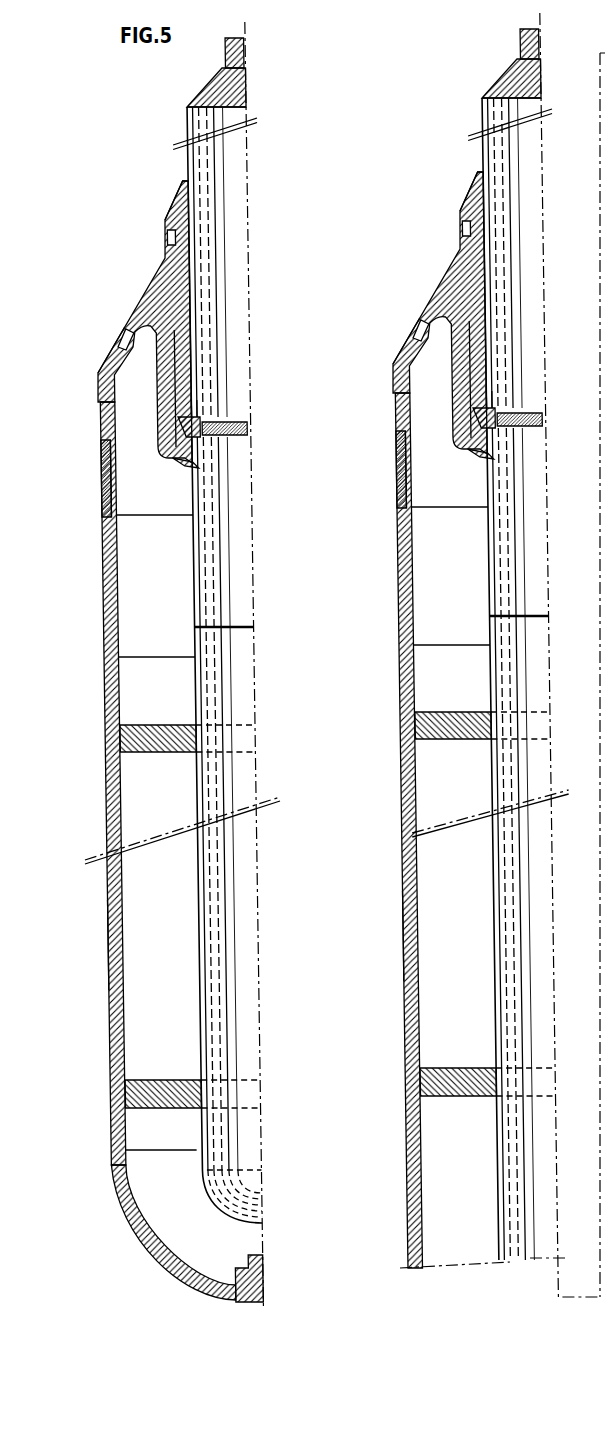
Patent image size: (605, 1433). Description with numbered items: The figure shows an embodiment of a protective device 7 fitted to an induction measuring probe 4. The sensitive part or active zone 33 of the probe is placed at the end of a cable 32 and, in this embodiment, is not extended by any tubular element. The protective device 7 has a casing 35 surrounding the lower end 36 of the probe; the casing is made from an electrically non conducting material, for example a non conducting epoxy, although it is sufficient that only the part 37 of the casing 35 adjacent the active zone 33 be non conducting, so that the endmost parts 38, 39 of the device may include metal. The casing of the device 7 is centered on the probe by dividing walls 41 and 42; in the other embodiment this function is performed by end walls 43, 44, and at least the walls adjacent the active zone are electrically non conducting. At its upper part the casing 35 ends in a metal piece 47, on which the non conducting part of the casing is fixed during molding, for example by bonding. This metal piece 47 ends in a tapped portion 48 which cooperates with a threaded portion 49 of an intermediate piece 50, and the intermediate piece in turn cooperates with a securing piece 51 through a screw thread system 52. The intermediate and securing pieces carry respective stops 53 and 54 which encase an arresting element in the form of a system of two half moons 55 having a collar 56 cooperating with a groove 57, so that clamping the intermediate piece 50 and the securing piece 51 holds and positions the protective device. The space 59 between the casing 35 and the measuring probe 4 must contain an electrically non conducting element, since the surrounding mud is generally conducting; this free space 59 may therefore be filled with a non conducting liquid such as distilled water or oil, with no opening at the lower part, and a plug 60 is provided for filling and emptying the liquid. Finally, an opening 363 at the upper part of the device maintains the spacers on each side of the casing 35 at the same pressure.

The protective device 7 is at (38, 265).
The measuring probe 4 is at (179, 558).
The cable 32 is at (224, 50).
The active zone 33 is at (178, 910).
The casing 35 is at (68, 887).
The lower end of the probe 36 is at (196, 1207).
The part of casing 37 is at (94, 938).
The endmost part 38 is at (139, 222).
The endmost part 39 is at (438, 313).
The dividing wall 41 is at (140, 724).
The dividing wall 42 is at (151, 1079).
The end wall 43 is at (450, 711).
The end wall 44 is at (453, 1070).
The metal piece 47 is at (109, 515).
The tapped portion 48 is at (96, 446).
The threaded portion 49 is at (93, 477).
The intermediate piece 50 is at (100, 360).
The securing piece 51 is at (172, 200).
The screw thread system 52 is at (174, 346).
The stop 53 is at (181, 462).
The stop 54 is at (186, 400).
The system of two half moons 55 is at (186, 438).
The collar 56 is at (189, 404).
The groove 57 is at (234, 432).
The space 59 is at (156, 801).
The plug 60 is at (231, 1303).
The opening 363 is at (120, 335).